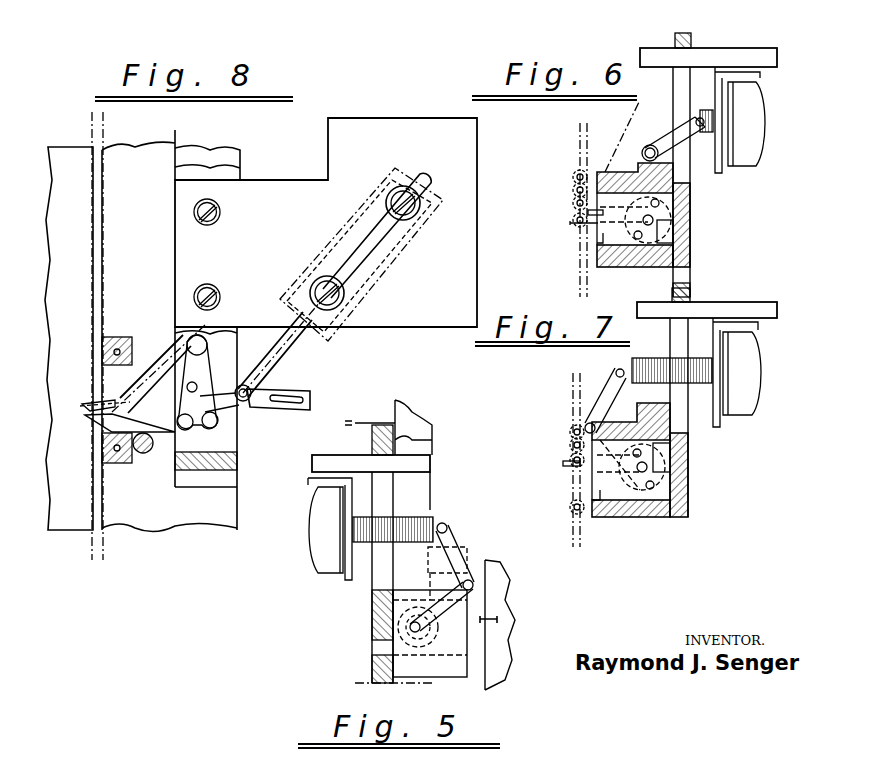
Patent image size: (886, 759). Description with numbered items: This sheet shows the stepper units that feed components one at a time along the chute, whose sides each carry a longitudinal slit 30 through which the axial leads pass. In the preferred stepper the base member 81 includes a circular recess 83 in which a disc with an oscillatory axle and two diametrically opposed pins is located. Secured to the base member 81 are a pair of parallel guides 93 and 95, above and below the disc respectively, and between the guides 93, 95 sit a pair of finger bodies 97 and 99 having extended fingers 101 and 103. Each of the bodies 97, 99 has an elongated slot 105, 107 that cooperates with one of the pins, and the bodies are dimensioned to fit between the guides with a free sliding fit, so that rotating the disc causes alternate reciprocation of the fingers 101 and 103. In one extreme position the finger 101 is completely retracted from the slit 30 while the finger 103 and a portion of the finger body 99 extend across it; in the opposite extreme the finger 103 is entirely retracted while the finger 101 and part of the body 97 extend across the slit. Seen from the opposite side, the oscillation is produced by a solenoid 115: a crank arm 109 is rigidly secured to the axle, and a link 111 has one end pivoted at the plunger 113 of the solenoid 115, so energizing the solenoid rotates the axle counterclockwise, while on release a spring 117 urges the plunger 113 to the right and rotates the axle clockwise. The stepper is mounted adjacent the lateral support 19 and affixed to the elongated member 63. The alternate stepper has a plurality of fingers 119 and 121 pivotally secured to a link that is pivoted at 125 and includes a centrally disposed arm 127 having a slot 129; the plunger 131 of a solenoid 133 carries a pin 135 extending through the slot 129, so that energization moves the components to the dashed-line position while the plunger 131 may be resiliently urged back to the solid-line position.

In FIG. 6, the lateral support 19 is at (690, 215).
In FIG. 7, the lateral support 19 is at (664, 460).
In FIG. 5, the lateral support 19 is at (372, 620).
In FIG. 8, the longitudinal slit 30 is at (100, 150).
In FIG. 8, the elongated member 63 is at (240, 178).
In FIG. 6, the base member 81 is at (590, 173).
In FIG. 6, the circular recess 83 is at (660, 232).
In FIG. 6, the guide 93 is at (622, 163).
In FIG. 6, the guide 95 is at (631, 260).
In FIG. 6, the finger body 97 is at (615, 203).
In FIG. 6, the finger body 99 is at (597, 245).
In FIG. 6, the finger 101 is at (582, 208).
In FIG. 5, the finger 101 is at (483, 618).
In FIG. 6, the finger 103 is at (583, 222).
In FIG. 7, the finger 103 is at (597, 513).
In FIG. 6, the elongated slot 105 is at (657, 203).
In FIG. 7, the elongated slot 105 is at (655, 452).
In FIG. 6, the elongated slot 107 is at (642, 238).
In FIG. 7, the elongated slot 107 is at (652, 487).
In FIG. 5, the crank arm 109 is at (437, 615).
In FIG. 5, the link 111 is at (463, 557).
In FIG. 7, the plunger 113 is at (663, 367).
In FIG. 6, the solenoid 115 is at (742, 148).
In FIG. 7, the solenoid 115 is at (743, 410).
In FIG. 5, the solenoid 115 is at (318, 565).
In FIG. 5, the spring 117 is at (417, 515).
In FIG. 8, the finger 119 is at (108, 403).
In FIG. 8, the finger 121 is at (97, 416).
In FIG. 8, the pivot 125 is at (198, 392).
In FIG. 8, the arm 127 is at (300, 390).
In FIG. 8, the slot 129 is at (303, 412).
In FIG. 8, the plunger 131 is at (250, 333).
In FIG. 8, the solenoid 133 is at (343, 215).
In FIG. 8, the pin 135 is at (248, 404).